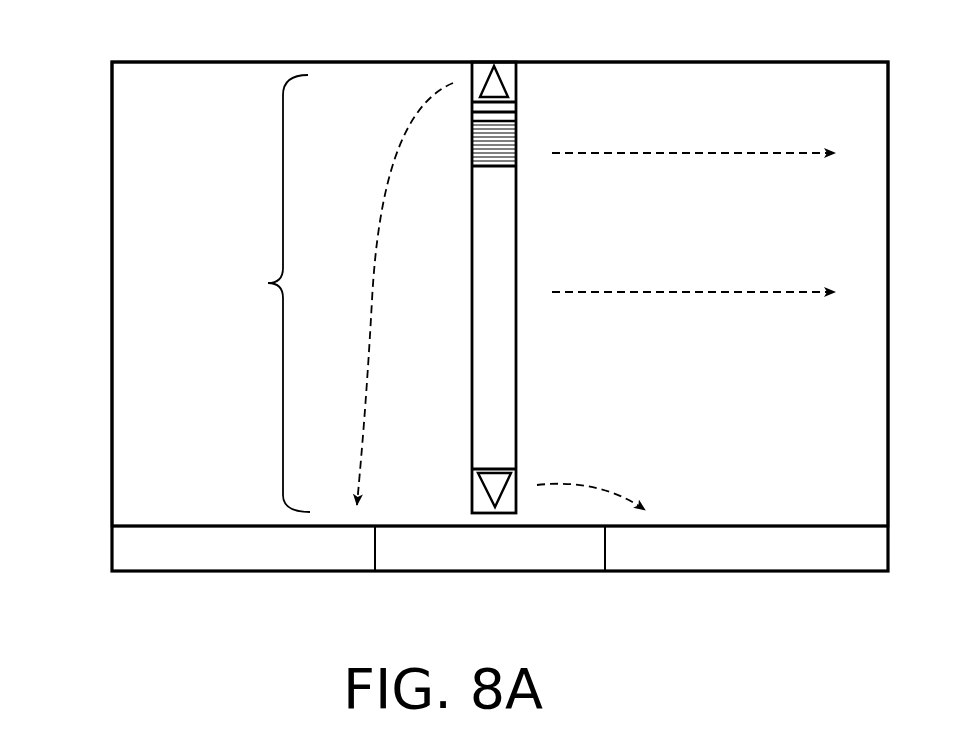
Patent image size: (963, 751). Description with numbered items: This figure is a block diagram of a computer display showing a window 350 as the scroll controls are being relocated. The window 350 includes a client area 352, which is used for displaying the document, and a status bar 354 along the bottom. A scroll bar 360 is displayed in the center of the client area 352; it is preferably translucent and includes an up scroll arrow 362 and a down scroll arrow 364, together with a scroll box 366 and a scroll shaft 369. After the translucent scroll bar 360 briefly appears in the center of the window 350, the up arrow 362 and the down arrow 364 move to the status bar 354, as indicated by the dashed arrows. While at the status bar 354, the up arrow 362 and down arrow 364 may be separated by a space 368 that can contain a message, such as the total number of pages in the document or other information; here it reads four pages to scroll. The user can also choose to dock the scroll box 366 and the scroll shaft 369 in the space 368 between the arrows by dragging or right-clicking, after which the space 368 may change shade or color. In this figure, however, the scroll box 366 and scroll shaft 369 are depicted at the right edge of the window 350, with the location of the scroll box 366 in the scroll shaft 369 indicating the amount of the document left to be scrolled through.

The window 350 is at (720, 654).
The client area 352 is at (203, 60).
The status bar 354 is at (112, 548).
The scroll bar 360 is at (331, 293).
The up scroll arrow 362 is at (508, 82).
The down scroll arrow 364 is at (500, 482).
The scroll box 366 is at (508, 140).
The space 368 is at (531, 571).
The scroll shaft 369 is at (516, 220).